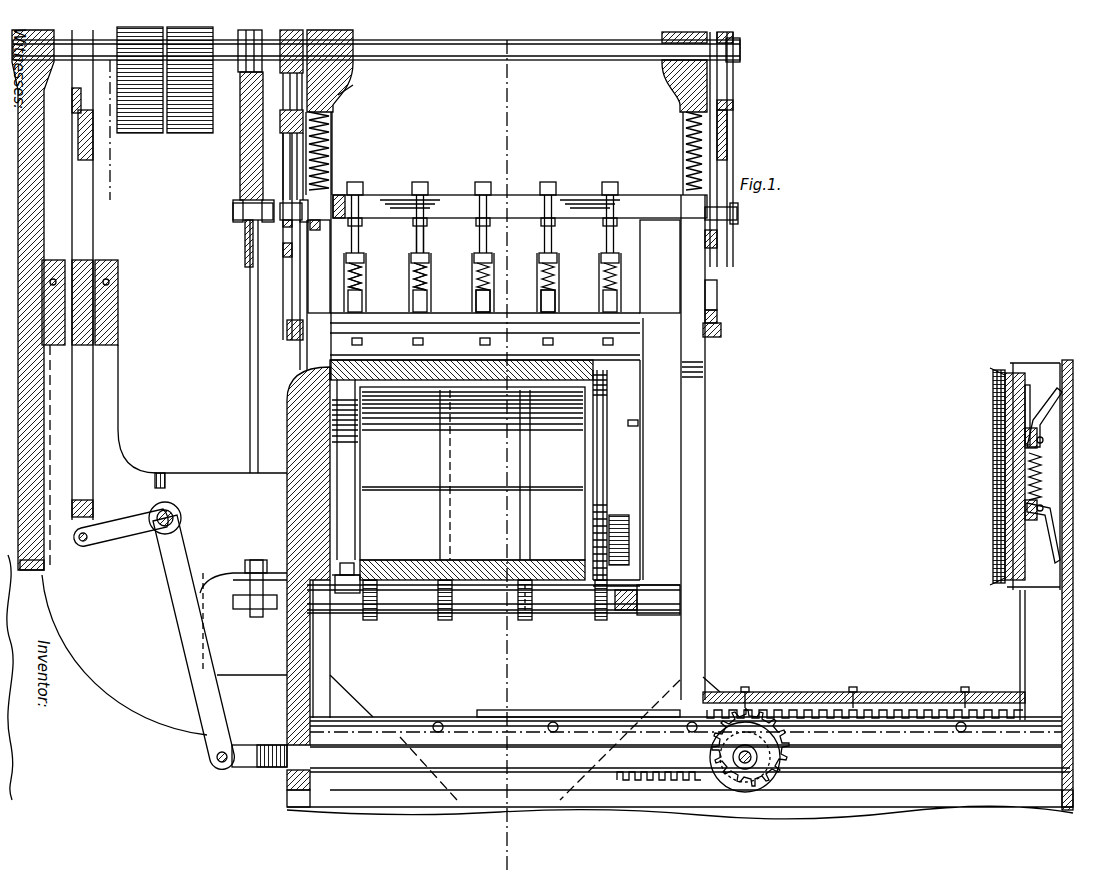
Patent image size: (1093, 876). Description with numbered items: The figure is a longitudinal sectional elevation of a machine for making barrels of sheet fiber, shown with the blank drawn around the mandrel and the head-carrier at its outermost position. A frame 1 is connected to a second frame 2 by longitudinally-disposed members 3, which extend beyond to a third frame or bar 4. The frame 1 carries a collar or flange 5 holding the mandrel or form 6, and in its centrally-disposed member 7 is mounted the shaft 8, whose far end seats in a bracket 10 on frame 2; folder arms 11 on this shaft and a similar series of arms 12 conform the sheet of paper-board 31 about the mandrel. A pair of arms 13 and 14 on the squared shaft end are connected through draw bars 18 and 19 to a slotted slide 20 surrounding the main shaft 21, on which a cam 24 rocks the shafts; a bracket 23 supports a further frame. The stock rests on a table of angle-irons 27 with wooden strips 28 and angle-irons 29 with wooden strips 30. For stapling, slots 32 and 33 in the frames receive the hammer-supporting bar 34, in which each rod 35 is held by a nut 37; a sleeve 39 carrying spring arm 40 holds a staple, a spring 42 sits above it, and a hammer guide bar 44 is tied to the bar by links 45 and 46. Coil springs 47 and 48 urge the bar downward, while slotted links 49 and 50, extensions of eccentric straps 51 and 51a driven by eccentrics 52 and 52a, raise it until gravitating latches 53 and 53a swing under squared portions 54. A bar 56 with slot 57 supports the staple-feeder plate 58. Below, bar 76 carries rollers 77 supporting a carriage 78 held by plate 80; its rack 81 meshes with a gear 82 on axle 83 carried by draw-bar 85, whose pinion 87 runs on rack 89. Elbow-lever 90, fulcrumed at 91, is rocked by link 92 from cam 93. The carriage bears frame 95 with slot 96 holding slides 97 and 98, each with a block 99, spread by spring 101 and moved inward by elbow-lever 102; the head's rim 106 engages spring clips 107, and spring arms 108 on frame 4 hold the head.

The frame 1 is at (332, 657).
The second frame 2 is at (20, 225).
The longitudinally-disposed members 3 is at (377, 803).
The third frame or bar 4 is at (1052, 640).
The collar or flange 5 is at (307, 33).
The mandrel or form 6 is at (156, 122).
The centrally-disposed member 7 is at (293, 658).
The shaft 8 is at (480, 608).
The bracket 10 is at (662, 618).
The folder or conforming arms 11 is at (525, 618).
The arms 12 is at (597, 450).
The arm 13 is at (277, 613).
The arm 14 is at (240, 583).
The draw bar 18 is at (253, 307).
The draw bar 19 is at (250, 233).
The slotted slide 20 is at (300, 170).
The main shaft 21 is at (447, 53).
The bracket 23 is at (160, 480).
The cam 24 is at (250, 45).
The angle-iron 27 is at (347, 613).
The wooden strips 28 is at (365, 560).
The angle-irons 29 is at (647, 567).
The wooden strips 30 is at (620, 583).
The sheet of paper-board 31 is at (632, 472).
The slot or way 32 is at (322, 248).
The slot or way 33 is at (688, 230).
The hammer-supporting bar 34 is at (587, 200).
The rod or bar 35 is at (478, 232).
The nut 37 is at (425, 188).
The sleeve 39 is at (420, 302).
The spring arm 40 is at (398, 345).
The spring 42 is at (407, 258).
The hammer guide bar 44 is at (643, 320).
The link 45 is at (298, 278).
The link 46 is at (717, 295).
The coil spring 47 is at (330, 135).
The coil spring 48 is at (690, 130).
The slotted link 49 is at (293, 172).
The slotted link 50 is at (728, 188).
The eccentric strap 51 is at (287, 143).
The eccentric strap 51a is at (728, 145).
The eccentric 52 is at (332, 95).
The eccentric 52a is at (728, 108).
The gravitating latch 53 is at (302, 200).
The gravitating latch 53a is at (707, 190).
The squared portion 54 is at (303, 210).
The bar 56 is at (577, 267).
The slot 57 is at (517, 287).
The plate 58 is at (467, 257).
The bar 76 is at (1028, 698).
The rollers 77 is at (440, 723).
The carriage 78 is at (765, 692).
The plate 80 is at (585, 715).
The rack 81 is at (815, 705).
The gear 82 is at (827, 800).
The axle 83 is at (770, 755).
The link or draw-bar 85 is at (378, 757).
The pinion 87 is at (762, 767).
The rack 89 is at (645, 773).
The elbow-lever 90 is at (173, 600).
The fulcrum 91 is at (157, 527).
The link 92 is at (85, 480).
The cam 93 is at (82, 80).
The frame 95 is at (1023, 382).
The slot 96 is at (1003, 545).
The slide 97 is at (1037, 440).
The slide 98 is at (1028, 533).
The block 99 is at (1002, 418).
The spring 101 is at (1020, 483).
The elbow-lever 102 is at (1057, 397).
The rim or flange 106 is at (998, 400).
The spring clips 107 is at (643, 418).
The spring arms 108 is at (1030, 363).